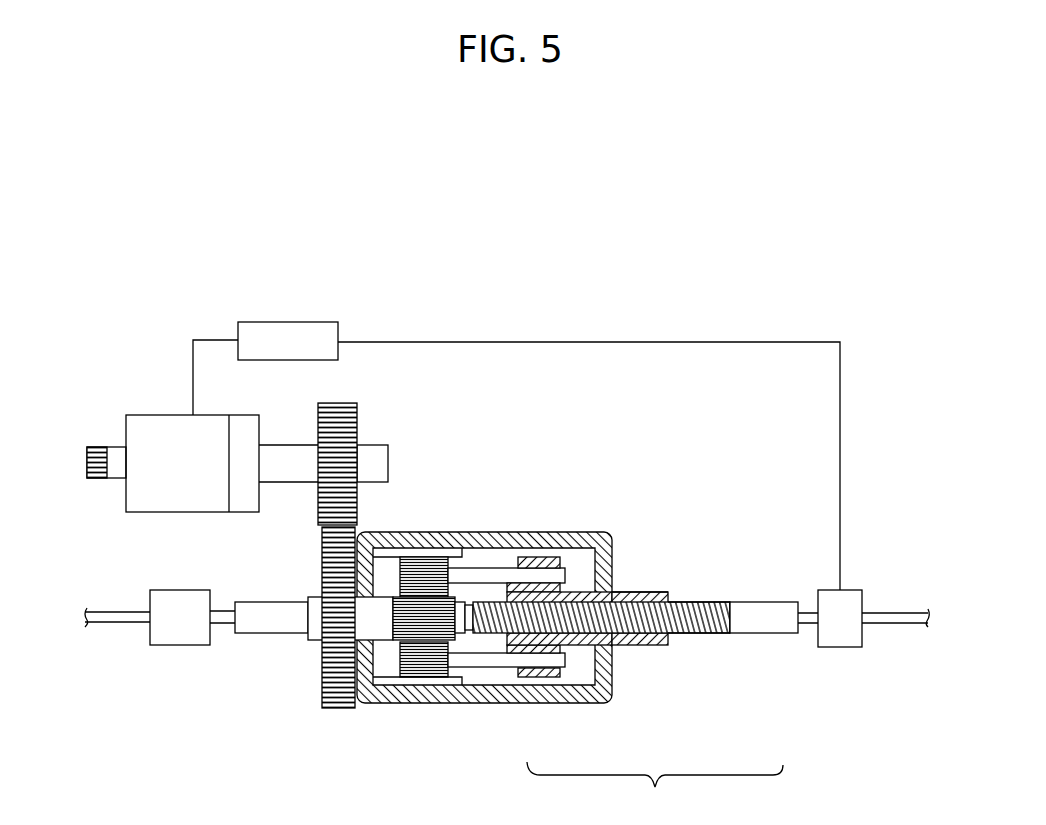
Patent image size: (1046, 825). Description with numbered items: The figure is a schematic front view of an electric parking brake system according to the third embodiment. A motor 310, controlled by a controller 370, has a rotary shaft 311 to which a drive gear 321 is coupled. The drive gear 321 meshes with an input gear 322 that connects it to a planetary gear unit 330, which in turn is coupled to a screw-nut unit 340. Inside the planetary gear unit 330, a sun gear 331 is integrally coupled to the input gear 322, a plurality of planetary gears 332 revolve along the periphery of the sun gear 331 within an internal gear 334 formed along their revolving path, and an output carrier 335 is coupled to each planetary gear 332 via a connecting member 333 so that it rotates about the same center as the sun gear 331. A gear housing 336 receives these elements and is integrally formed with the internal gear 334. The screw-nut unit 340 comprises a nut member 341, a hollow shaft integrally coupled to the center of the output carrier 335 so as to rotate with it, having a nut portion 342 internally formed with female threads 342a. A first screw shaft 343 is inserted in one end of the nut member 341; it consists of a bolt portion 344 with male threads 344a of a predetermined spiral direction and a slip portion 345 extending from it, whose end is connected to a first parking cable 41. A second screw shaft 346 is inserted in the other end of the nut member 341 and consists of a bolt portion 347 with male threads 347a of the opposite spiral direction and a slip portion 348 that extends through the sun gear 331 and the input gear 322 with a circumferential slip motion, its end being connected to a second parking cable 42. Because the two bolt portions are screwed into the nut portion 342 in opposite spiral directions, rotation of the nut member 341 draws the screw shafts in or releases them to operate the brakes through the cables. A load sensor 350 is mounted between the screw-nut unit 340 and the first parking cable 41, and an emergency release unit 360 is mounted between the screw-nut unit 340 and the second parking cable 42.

The motor 310 is at (150, 422).
The rotary shaft 311 is at (370, 452).
The drive gear 321 is at (347, 401).
The input gear 322 is at (320, 683).
The planetary gear unit 330 is at (570, 525).
The sun gear 331 is at (448, 600).
The planetary gears 332 is at (440, 570).
The connecting member 333 is at (493, 577).
The internal gear 334 is at (378, 688).
The output carrier 335 is at (540, 562).
The gear housing 336 is at (395, 532).
The screw-nut unit 340 is at (655, 790).
The nut member 341 is at (628, 648).
The nut portion 342 is at (583, 595).
The female threads 342a is at (633, 592).
The first screw shaft 343 is at (725, 655).
The bolt portion 344 is at (694, 592).
The male threads 344a is at (717, 602).
The slip portion 345 is at (777, 625).
The second screw shaft 346 is at (483, 647).
The bolt portion 347 is at (527, 647).
The male threads 347a is at (530, 657).
The slip portion 348 is at (270, 630).
The load sensor 350 is at (840, 647).
The emergency release unit 360 is at (177, 640).
The controller 370 is at (288, 320).
The first parking cable 41 is at (905, 612).
The second parking cable 42 is at (122, 612).